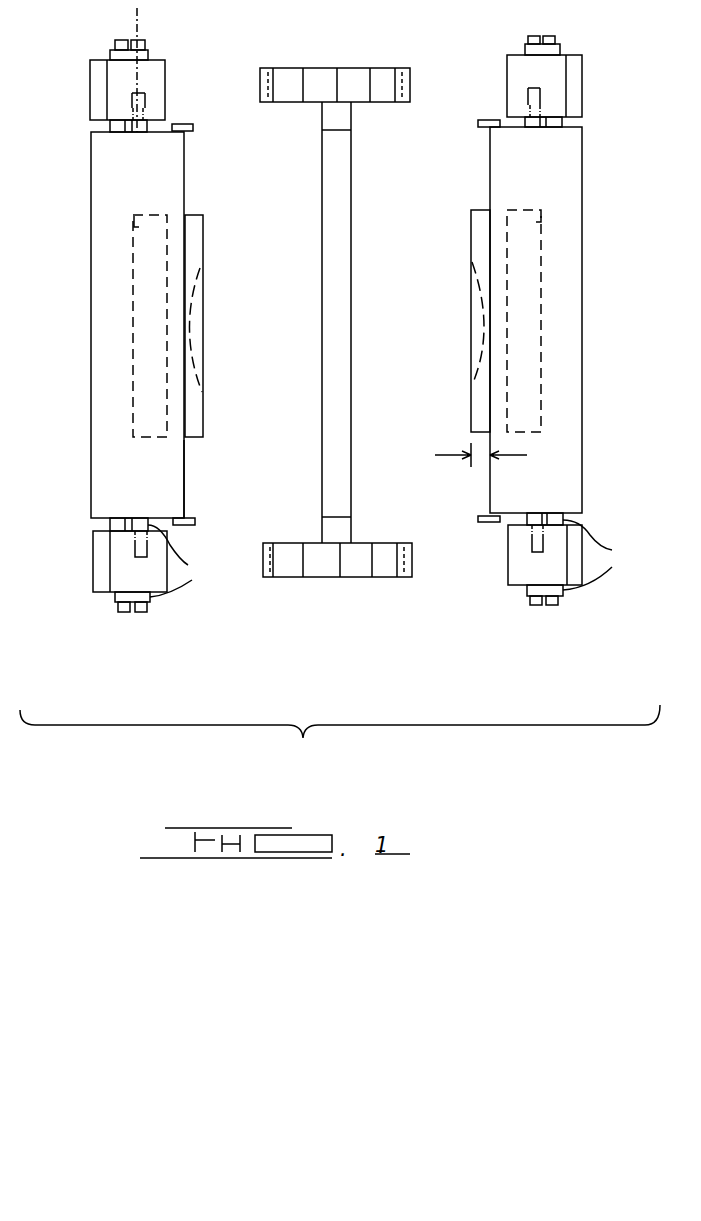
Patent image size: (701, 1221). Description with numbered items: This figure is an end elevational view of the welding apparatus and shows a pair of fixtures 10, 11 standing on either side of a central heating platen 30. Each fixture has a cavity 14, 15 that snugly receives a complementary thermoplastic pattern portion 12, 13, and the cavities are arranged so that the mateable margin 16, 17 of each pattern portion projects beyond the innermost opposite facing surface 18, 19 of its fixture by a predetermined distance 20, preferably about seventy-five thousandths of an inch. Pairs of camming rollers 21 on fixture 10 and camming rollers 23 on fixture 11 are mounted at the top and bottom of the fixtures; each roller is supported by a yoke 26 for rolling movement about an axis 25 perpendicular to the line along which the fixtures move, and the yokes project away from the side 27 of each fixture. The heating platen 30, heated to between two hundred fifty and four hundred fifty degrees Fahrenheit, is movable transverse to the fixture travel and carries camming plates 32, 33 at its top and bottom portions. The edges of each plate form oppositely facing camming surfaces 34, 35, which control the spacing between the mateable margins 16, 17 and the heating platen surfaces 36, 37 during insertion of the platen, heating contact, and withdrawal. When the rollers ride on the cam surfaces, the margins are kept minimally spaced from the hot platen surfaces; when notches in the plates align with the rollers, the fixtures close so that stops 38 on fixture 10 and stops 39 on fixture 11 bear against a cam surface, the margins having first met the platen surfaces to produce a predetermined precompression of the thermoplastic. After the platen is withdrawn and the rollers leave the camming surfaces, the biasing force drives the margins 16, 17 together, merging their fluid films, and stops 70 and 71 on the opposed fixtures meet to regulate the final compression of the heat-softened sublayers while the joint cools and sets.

The fixture 10 is at (100, 333).
The fixture 11 is at (570, 301).
The pattern portion 12 is at (213, 246).
The pattern portion 13 is at (462, 286).
The cavity 14 is at (138, 214).
The cavity 15 is at (540, 212).
The mateable margin 16 is at (203, 405).
The mateable margin 17 is at (471, 396).
The innermost opposite facing surface 18 is at (186, 473).
The innermost opposite facing surface 19 is at (490, 494).
The predetermined distance 20 is at (522, 457).
The camming rollers 21 is at (105, 92).
The camming rollers 23 is at (555, 70).
The axis 25 is at (140, 26).
The yoke 26 is at (182, 561).
The side 27 is at (142, 494).
The heating platen 30 is at (362, 232).
The camming plate 32 is at (333, 60).
The camming plate 33 is at (320, 590).
The camming surface 34 is at (272, 72).
The camming surface 35 is at (416, 72).
The heating platen surface 36 is at (322, 371).
The heating platen surface 37 is at (353, 339).
The stop 38 is at (148, 102).
The stop 39 is at (528, 96).
The stop 70 is at (479, 123).
The stop 71 is at (193, 128).